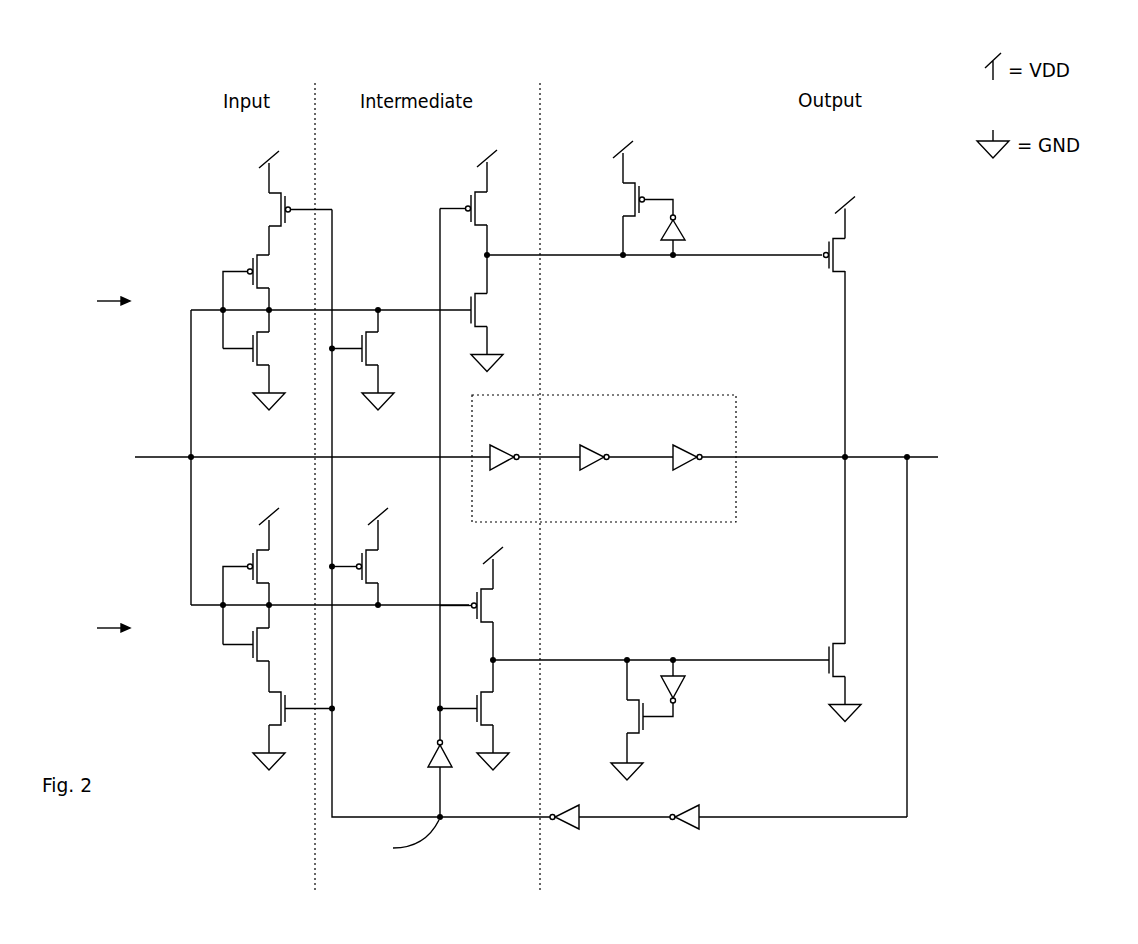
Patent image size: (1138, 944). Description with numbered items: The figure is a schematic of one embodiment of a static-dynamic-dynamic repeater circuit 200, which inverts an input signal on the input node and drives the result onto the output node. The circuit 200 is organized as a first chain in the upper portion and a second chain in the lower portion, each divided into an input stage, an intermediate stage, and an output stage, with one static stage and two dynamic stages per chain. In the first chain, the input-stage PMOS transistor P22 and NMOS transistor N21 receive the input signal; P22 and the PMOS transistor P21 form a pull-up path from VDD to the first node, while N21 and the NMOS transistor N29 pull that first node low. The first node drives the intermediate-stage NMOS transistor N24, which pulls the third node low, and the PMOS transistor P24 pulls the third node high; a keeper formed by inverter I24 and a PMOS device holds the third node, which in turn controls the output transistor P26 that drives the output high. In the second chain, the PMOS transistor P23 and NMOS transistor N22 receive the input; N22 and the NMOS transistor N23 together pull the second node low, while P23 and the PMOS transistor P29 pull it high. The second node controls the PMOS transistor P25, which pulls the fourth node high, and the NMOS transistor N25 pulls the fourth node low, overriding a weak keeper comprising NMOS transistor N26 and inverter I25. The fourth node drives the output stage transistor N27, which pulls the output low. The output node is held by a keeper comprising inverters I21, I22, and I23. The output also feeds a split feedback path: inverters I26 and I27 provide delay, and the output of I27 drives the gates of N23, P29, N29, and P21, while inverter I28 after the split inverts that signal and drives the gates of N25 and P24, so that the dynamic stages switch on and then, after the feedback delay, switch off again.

The static-dynamic-dynamic repeater circuit 200 is at (537, 65).
The PMOS transistor P21 is at (282, 203).
The PMOS transistor P22 is at (262, 302).
The NMOS transistor N21 is at (267, 371).
The NMOS transistor N29 is at (372, 360).
The PMOS transistor P23 is at (264, 576).
The NMOS transistor N22 is at (264, 660).
The NMOS transistor N23 is at (278, 731).
The PMOS transistor P29 is at (377, 556).
The PMOS transistor P24 is at (485, 222).
The NMOS transistor N24 is at (497, 333).
The PMOS transistor P25 is at (487, 619).
The NMOS transistor N25 is at (485, 731).
The output transistor P26 is at (859, 234).
The output stage transistor N27 is at (858, 683).
The NMOS transistor N26 is at (630, 720).
The inverter I21 is at (505, 444).
The inverter I22 is at (594, 444).
The inverter I23 is at (687, 444).
The inverter I24 is at (691, 234).
The inverter I25 is at (692, 682).
The inverter I26 is at (686, 834).
The inverter I27 is at (569, 834).
The inverter I28 is at (423, 754).